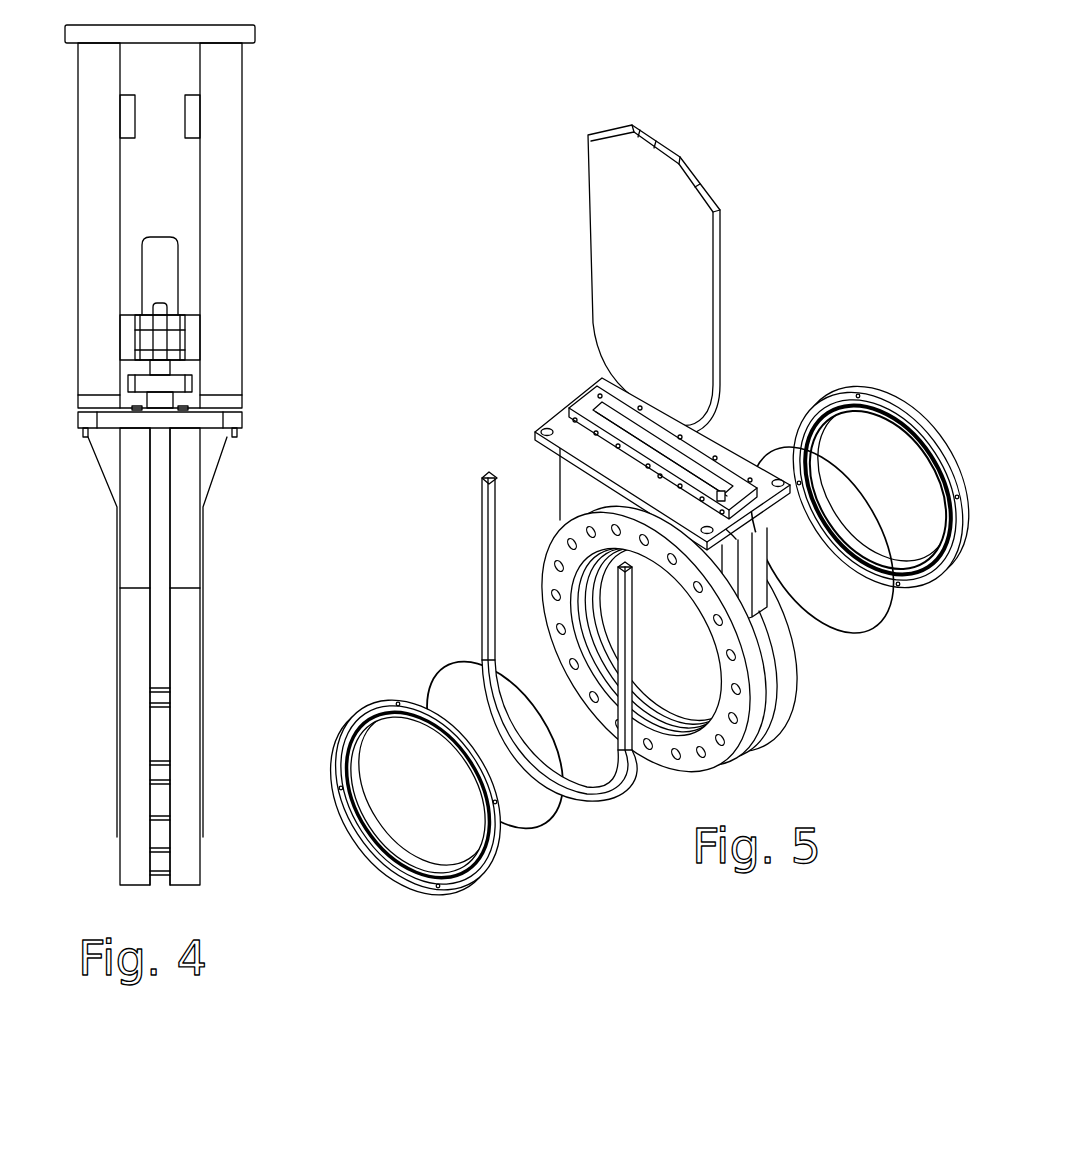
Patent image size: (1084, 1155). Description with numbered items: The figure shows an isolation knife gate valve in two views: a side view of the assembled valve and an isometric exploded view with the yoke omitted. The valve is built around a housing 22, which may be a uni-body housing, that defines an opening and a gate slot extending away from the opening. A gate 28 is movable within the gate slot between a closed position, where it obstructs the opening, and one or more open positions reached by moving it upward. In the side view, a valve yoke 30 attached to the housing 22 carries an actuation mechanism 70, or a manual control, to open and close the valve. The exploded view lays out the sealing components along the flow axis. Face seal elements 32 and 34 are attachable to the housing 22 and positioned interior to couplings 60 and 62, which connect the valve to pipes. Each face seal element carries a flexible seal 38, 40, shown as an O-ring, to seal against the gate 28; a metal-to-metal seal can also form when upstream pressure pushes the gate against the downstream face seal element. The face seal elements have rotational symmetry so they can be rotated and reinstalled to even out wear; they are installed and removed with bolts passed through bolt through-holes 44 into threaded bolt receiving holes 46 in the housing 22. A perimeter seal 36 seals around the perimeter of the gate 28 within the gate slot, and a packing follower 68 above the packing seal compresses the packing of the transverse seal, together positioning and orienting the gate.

In FIG. 4, the housing 22 is at (187, 538).
In FIG. 5, the housing 22 is at (780, 632).
In FIG. 5, the gate 28 is at (718, 262).
In FIG. 4, the valve yoke 30 is at (237, 197).
In FIG. 5, the face seal element 32 is at (478, 870).
In FIG. 5, the face seal element 34 is at (893, 420).
In FIG. 5, the perimeter seal 36 is at (613, 790).
In FIG. 5, the flexible seal 38 is at (438, 663).
In FIG. 5, the flexible seal 40 is at (868, 617).
In FIG. 5, the bolt through-hole 44 is at (415, 878).
In FIG. 5, the threaded bolt receiving hole 46 is at (640, 750).
In FIG. 4, the coupling 60 is at (133, 707).
In FIG. 5, the coupling 60 is at (723, 762).
In FIG. 4, the coupling 62 is at (192, 697).
In FIG. 5, the coupling 62 is at (777, 723).
In FIG. 4, the packing follower 68 is at (190, 380).
In FIG. 5, the packing follower 68 is at (580, 400).
In FIG. 4, the actuation mechanism 70 is at (190, 330).